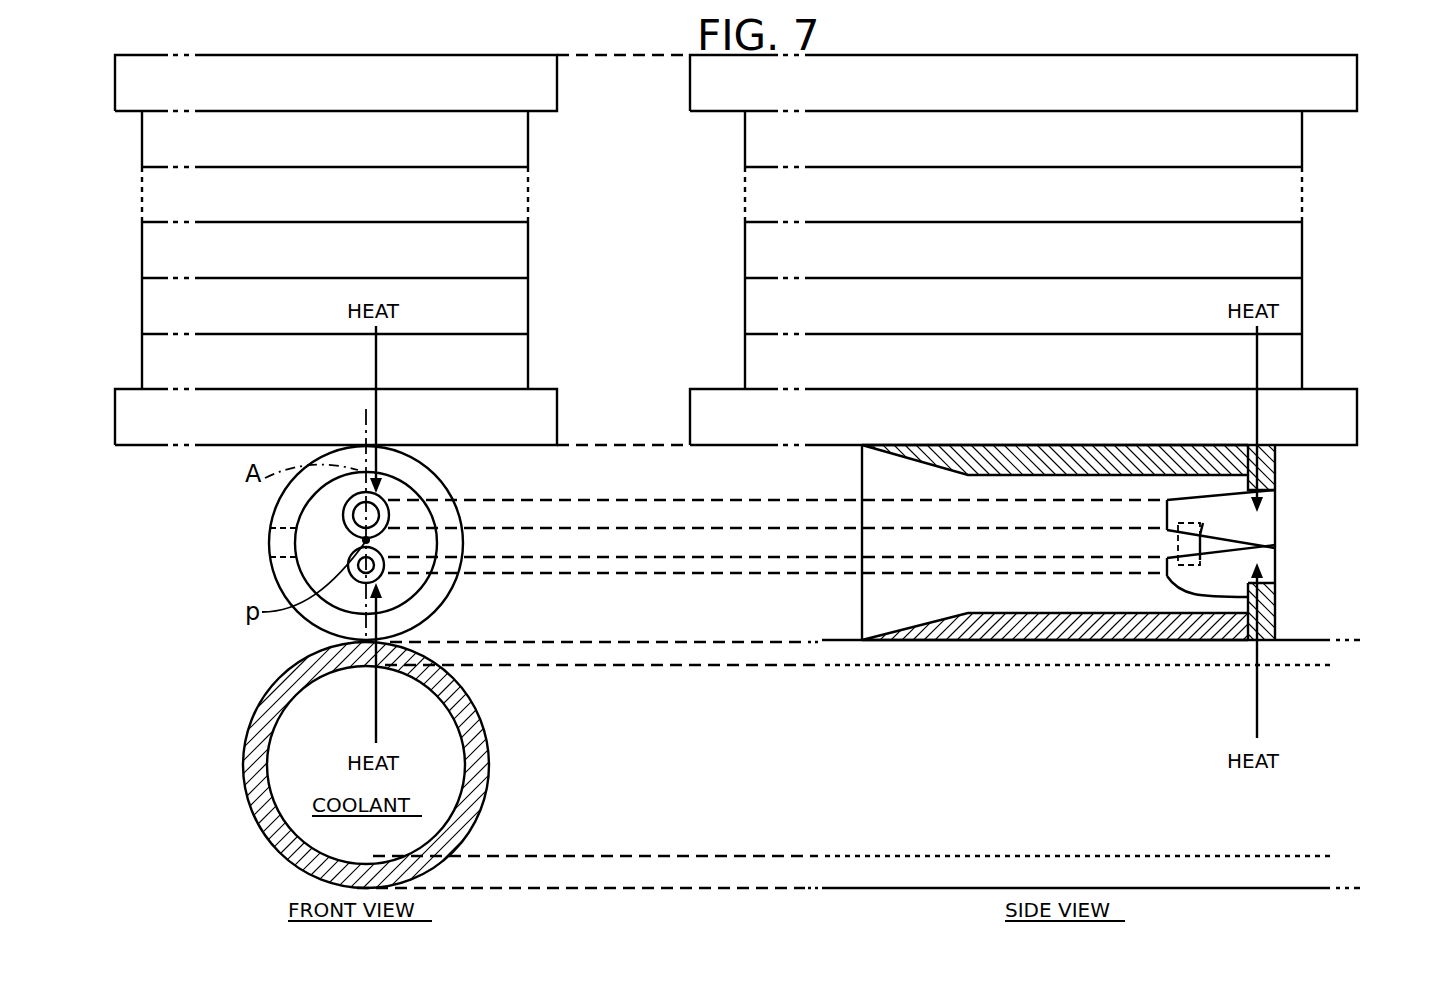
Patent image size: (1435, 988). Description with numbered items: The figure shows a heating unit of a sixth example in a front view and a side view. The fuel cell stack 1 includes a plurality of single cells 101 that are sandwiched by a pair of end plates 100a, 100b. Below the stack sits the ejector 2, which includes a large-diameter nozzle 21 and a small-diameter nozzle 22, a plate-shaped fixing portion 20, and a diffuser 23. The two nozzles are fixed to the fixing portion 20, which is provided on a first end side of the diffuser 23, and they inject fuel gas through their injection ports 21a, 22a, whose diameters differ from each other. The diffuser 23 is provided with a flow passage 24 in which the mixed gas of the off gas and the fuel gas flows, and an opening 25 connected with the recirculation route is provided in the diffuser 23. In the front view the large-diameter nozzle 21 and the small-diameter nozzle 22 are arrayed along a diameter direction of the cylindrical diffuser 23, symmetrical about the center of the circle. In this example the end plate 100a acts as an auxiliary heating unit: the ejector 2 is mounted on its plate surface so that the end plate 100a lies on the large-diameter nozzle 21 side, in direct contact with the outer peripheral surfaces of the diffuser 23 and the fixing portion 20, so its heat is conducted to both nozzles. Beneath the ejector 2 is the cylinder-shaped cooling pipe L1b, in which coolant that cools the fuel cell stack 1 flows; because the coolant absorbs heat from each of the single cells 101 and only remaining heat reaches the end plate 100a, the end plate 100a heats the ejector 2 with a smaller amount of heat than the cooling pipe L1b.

The fuel cell stack 1 is at (592, 166).
The end plate 100a is at (557, 410).
The end plate 100b is at (557, 101).
The single cell 101 is at (528, 162).
The ejector 2 is at (486, 516).
The fixing portion 20 is at (1263, 445).
The large-diameter nozzle 21 is at (389, 483).
The injection port 21a is at (1167, 500).
The small-diameter nozzle 22 is at (372, 549).
The injection port 22a is at (1250, 597).
The diffuser 23 is at (440, 477).
The flow passage 24 is at (336, 554).
The opening 25 is at (277, 520).
The cooling pipe L1b is at (470, 712).